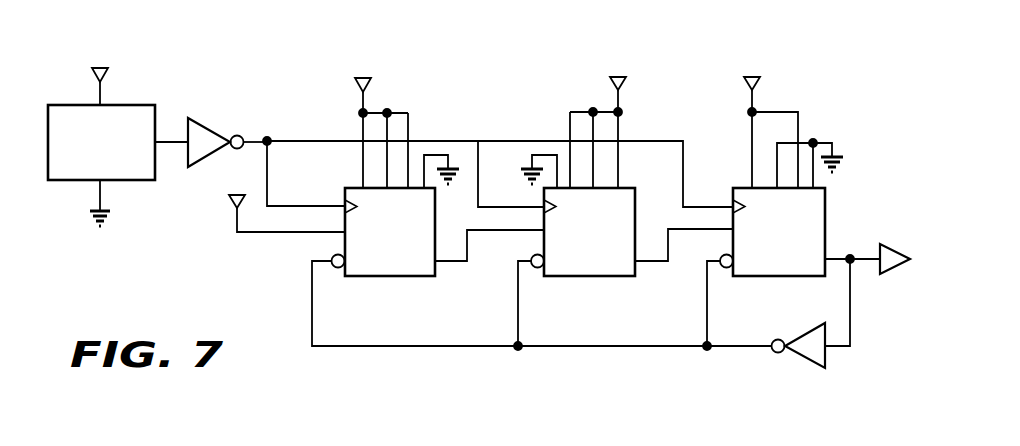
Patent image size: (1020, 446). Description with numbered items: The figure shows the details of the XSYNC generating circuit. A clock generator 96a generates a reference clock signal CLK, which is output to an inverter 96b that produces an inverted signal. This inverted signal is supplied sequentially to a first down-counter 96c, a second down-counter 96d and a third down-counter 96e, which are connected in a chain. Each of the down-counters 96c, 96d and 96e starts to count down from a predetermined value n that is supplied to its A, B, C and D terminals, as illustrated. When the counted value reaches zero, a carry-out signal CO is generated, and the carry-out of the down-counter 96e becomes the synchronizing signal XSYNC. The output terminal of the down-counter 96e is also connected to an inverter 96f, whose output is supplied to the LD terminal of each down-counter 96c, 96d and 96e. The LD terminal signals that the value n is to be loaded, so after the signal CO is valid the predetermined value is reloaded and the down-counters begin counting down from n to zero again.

The clock generator 96a is at (158, 117).
The inverter 96b is at (187, 153).
The down-counter 96c is at (350, 187).
The down-counter 96d is at (630, 185).
The down-counter 96e is at (828, 223).
The inverter 96f is at (823, 367).